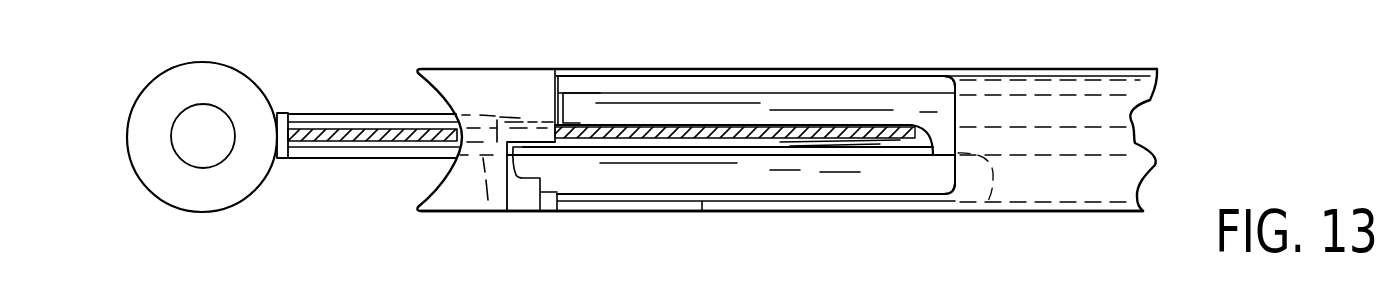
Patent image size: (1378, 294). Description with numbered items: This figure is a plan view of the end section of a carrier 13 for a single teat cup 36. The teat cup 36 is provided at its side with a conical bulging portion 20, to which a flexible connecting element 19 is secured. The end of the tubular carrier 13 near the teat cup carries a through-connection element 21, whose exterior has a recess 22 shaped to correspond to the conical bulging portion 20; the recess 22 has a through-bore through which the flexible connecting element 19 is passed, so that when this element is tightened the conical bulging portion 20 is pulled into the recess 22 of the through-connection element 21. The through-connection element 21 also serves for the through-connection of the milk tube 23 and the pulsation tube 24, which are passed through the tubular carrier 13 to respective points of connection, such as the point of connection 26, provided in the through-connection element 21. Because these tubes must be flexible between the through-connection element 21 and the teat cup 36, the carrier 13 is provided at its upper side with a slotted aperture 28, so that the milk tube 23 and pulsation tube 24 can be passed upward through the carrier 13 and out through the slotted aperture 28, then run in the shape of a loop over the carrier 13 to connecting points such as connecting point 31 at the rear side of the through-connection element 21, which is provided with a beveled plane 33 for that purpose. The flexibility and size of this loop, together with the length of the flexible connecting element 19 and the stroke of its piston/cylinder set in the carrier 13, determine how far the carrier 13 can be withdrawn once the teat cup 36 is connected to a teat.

The carrier 13 is at (1105, 168).
The flexible connecting element 19 is at (396, 142).
The conical bulging portion 20 is at (279, 113).
The through-connection element 21 is at (477, 72).
The recess 22 is at (473, 212).
The milk tube 23 is at (315, 158).
The pulsation tube 24 is at (360, 122).
The point of connection 26 is at (576, 100).
The slotted aperture 28 is at (905, 87).
The connecting point 31 is at (535, 182).
The beveled plane 33 is at (522, 204).
The teat cup 36 is at (181, 187).